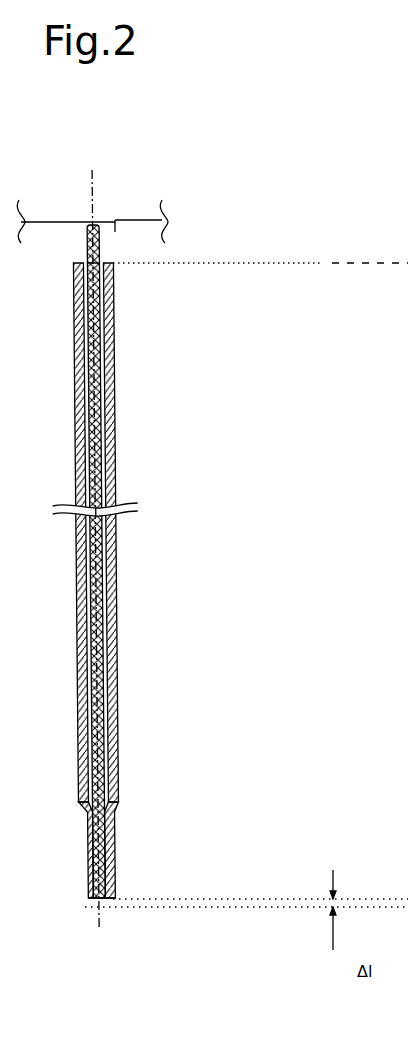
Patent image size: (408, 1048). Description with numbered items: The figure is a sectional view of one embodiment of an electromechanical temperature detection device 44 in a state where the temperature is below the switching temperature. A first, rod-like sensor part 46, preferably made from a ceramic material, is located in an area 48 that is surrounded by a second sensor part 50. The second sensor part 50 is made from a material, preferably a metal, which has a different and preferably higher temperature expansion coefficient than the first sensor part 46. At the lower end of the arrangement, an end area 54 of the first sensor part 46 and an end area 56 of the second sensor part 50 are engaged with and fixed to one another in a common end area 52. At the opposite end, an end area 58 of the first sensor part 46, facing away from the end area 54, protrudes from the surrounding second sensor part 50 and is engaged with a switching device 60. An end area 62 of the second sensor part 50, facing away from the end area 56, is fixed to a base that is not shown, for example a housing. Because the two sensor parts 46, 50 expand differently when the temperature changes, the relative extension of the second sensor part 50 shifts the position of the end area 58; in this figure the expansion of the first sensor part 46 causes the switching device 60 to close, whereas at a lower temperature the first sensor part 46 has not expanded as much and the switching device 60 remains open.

The electromechanical temperature detection device 44 is at (170, 600).
The first sensor part 46 is at (101, 383).
The area 48 is at (100, 444).
The second sensor part 50 is at (114, 485).
The end area 52 is at (126, 848).
The end area of the first sensor part 54 is at (103, 838).
The end area of the second sensor part 56 is at (106, 882).
The end area of the first sensor part 58 is at (100, 247).
The switching device 60 is at (126, 204).
The end area of the second sensor part 62 is at (113, 271).